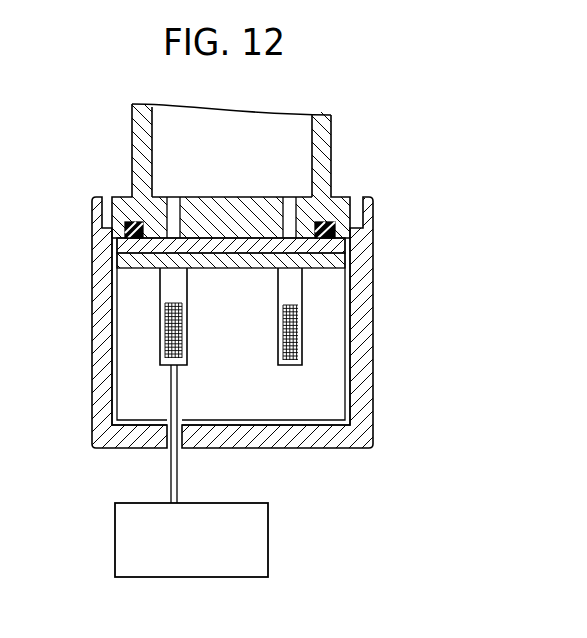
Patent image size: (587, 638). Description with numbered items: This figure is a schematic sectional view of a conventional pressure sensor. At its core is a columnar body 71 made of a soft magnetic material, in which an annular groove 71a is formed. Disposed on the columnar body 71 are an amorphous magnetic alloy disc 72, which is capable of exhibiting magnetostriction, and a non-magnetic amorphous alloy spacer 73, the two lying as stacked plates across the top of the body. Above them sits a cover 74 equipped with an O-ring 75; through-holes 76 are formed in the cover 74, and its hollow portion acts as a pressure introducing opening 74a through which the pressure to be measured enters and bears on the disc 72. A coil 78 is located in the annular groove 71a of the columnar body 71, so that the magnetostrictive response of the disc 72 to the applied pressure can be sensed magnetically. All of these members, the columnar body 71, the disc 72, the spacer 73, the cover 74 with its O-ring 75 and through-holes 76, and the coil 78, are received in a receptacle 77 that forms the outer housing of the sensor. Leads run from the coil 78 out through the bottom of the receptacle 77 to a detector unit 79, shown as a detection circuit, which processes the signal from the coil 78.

The columnar body 71 is at (332, 366).
The annular groove 71a is at (172, 283).
The amorphous magnetic alloy disc 72 is at (338, 246).
The non-magnetic amorphous alloy spacer 73 is at (340, 262).
The cover 74 is at (323, 147).
The pressure introducing opening 74a is at (285, 133).
The O-ring 75 is at (338, 226).
The through-holes 76 is at (177, 207).
The receptacle 77 is at (366, 428).
The coil 78 is at (298, 325).
The detector unit 79 is at (252, 503).